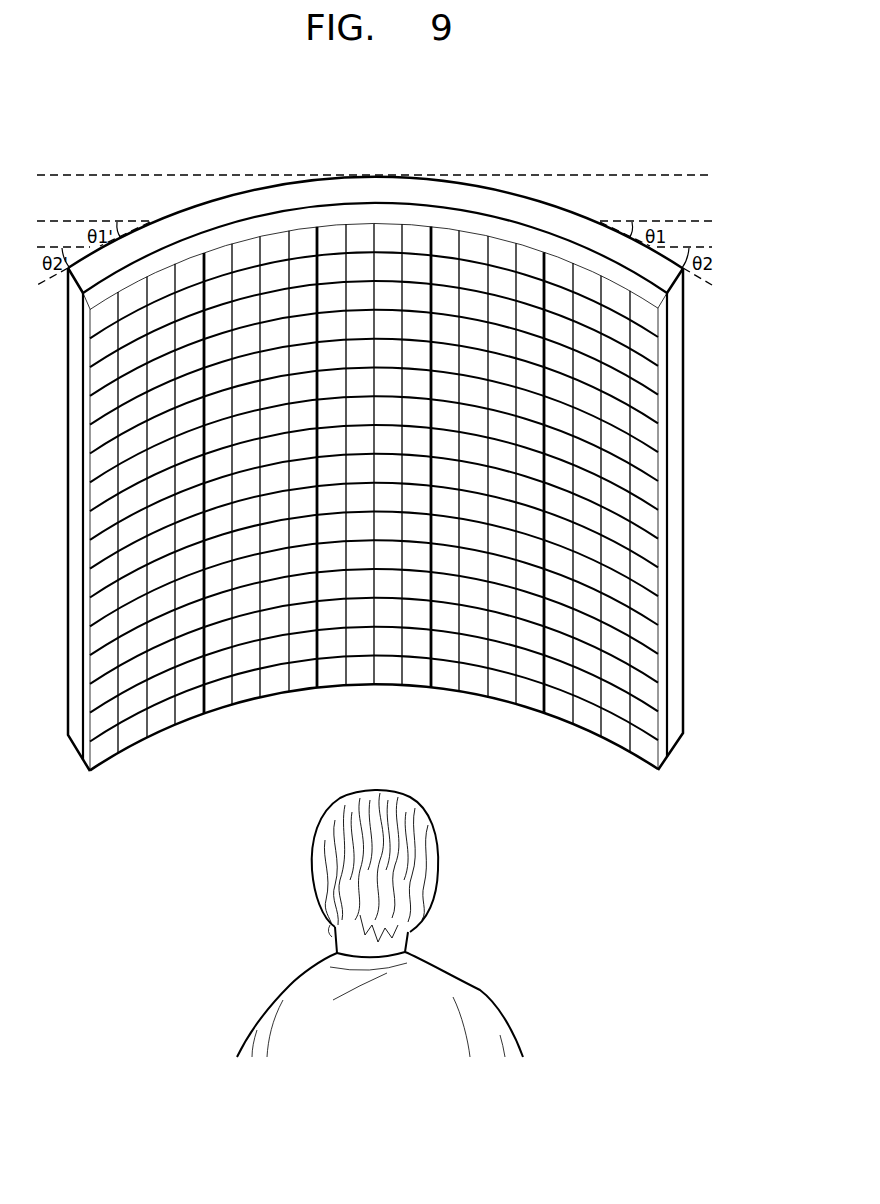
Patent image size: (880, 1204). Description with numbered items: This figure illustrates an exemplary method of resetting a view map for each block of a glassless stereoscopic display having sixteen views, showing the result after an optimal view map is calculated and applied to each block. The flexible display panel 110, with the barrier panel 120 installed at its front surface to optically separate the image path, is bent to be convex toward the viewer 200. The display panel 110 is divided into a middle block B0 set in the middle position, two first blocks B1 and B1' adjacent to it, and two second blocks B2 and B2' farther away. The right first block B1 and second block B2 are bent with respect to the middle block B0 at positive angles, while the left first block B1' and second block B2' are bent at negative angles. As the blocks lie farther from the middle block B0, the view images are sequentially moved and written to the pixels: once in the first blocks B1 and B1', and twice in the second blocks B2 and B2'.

The display panel 110 is at (677, 473).
The barrier panel 120 is at (419, 504).
The viewer 200 is at (480, 993).
The middle block B0 is at (380, 678).
The right first block B1 is at (497, 500).
The right second block B2 is at (610, 540).
The left first block B1' is at (258, 499).
The left second block B2' is at (147, 540).